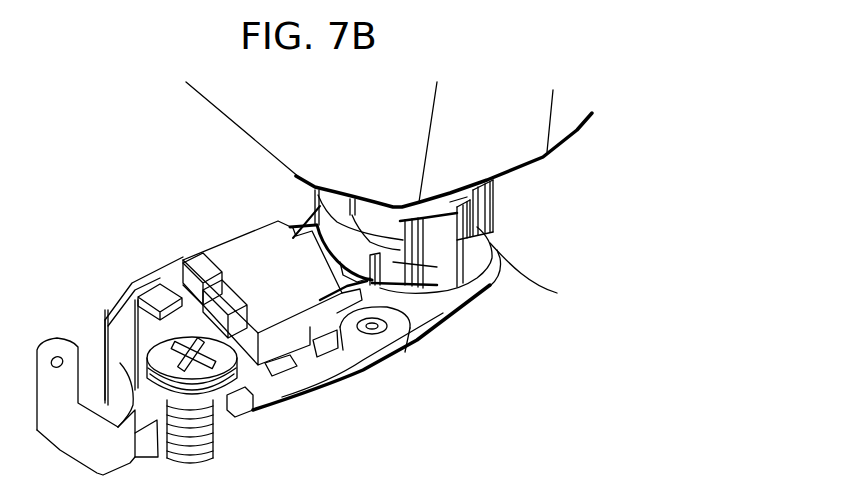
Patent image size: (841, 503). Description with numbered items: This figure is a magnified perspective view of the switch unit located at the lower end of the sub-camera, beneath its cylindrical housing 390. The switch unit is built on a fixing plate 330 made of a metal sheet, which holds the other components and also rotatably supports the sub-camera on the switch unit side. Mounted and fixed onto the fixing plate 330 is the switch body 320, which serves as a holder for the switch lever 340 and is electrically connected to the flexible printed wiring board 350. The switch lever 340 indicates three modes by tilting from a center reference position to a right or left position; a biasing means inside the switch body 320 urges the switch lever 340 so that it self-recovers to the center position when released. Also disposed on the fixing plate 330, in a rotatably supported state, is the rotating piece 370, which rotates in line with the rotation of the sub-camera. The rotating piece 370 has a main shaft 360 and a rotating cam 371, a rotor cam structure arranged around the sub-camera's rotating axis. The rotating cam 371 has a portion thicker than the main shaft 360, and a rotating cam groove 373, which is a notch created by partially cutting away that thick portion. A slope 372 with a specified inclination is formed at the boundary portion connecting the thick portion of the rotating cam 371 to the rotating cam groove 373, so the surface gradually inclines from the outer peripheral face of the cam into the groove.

The cylindrical housing 390 is at (243, 105).
The switch body 320 is at (235, 277).
The fixing plate 330 is at (425, 303).
The switch lever 340 is at (373, 338).
The flexible printed wiring board 350 is at (307, 364).
The main shaft 360 is at (493, 186).
The rotating piece 370 is at (657, 163).
The rotating cam 371 is at (495, 212).
The slope 372 is at (493, 222).
The rotating cam groove 373 is at (478, 290).